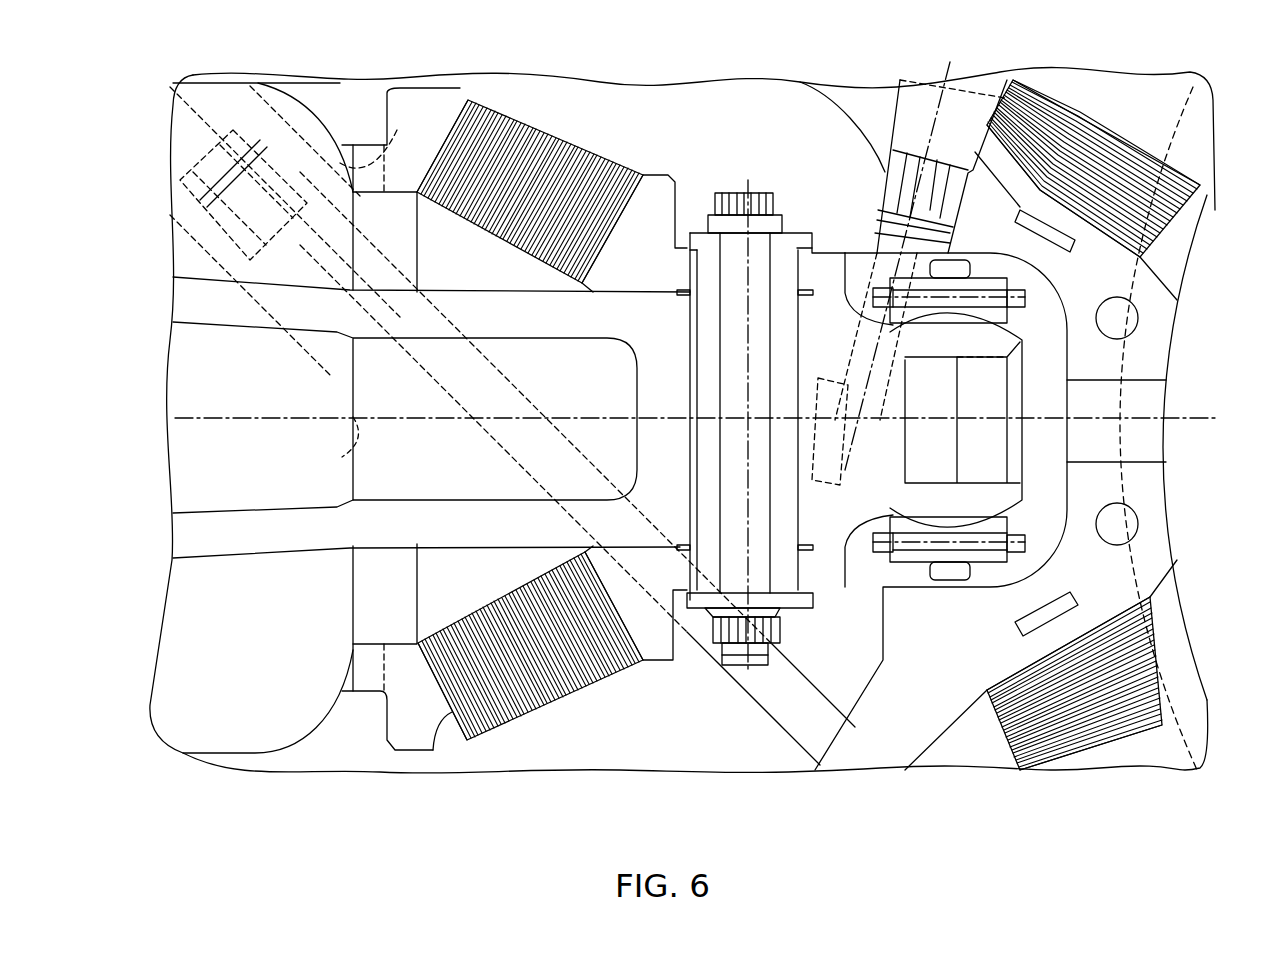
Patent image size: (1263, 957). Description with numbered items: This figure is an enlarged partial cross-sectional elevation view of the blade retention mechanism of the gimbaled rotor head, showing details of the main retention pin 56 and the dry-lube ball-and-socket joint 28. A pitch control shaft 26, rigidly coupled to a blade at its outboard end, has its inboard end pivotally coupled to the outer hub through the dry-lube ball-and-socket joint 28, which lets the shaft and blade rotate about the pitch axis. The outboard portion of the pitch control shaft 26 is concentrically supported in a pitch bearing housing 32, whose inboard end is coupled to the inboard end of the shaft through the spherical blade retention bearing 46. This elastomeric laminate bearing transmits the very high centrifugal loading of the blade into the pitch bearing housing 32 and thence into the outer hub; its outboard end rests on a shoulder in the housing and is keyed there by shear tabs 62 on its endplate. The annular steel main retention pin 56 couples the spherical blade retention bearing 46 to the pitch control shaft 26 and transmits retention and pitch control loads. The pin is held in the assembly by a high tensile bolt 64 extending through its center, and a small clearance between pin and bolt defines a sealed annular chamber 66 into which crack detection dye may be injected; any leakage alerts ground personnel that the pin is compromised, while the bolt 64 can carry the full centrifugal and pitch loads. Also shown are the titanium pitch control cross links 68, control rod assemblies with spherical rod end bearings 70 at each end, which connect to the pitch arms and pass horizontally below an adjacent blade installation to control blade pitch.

The pitch control shaft 26 is at (272, 538).
The dry-lube ball-and-socket joint 28 is at (1040, 507).
The pitch bearing housing 32 is at (333, 753).
The spherical blade retention bearing 46 is at (550, 140).
The main retention pin 56 is at (712, 236).
The shear tabs 62 is at (353, 150).
The high tensile bolt 64 is at (750, 196).
The sealed annular chamber 66 is at (850, 585).
The pitch control cross links 68 is at (970, 95).
The spherical rod end bearings 70 is at (830, 388).